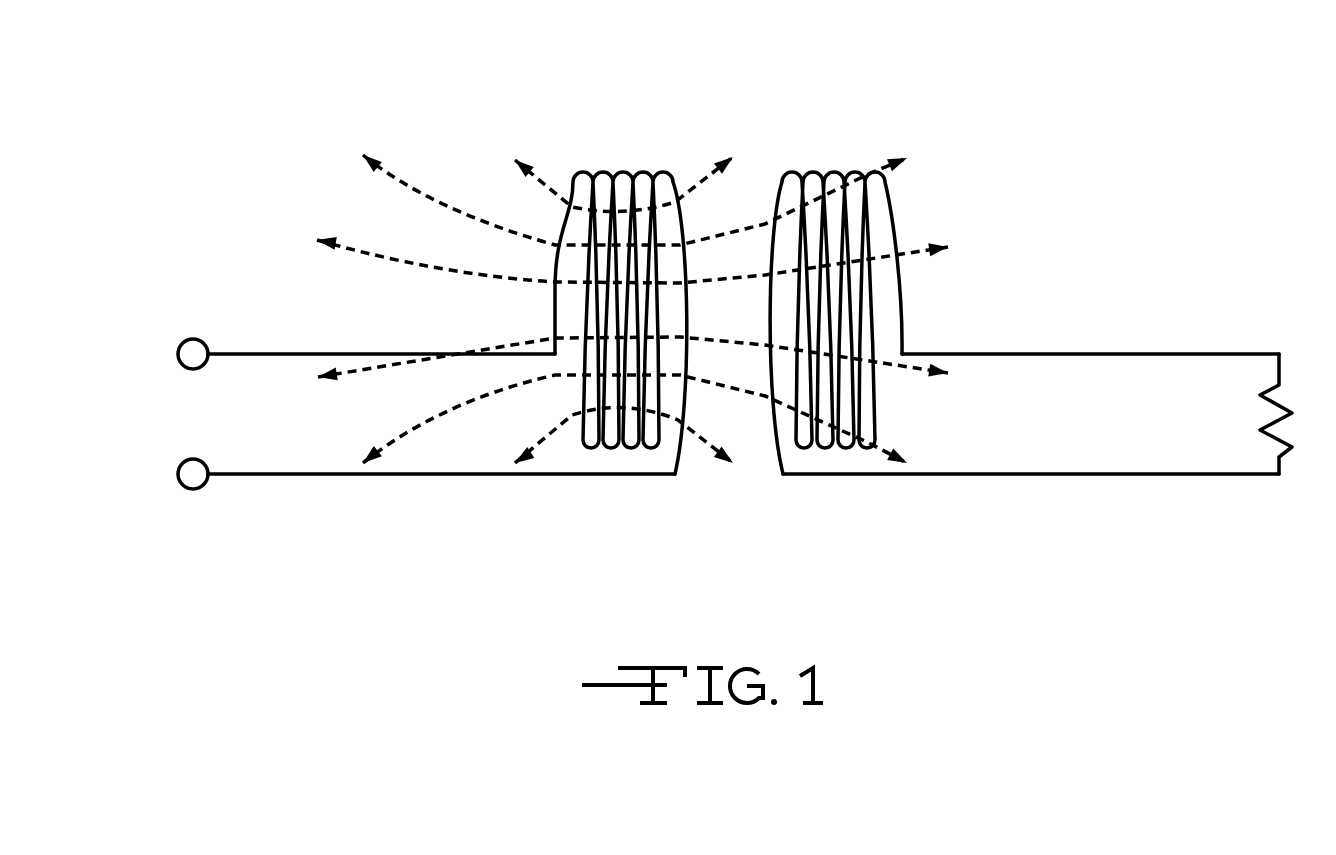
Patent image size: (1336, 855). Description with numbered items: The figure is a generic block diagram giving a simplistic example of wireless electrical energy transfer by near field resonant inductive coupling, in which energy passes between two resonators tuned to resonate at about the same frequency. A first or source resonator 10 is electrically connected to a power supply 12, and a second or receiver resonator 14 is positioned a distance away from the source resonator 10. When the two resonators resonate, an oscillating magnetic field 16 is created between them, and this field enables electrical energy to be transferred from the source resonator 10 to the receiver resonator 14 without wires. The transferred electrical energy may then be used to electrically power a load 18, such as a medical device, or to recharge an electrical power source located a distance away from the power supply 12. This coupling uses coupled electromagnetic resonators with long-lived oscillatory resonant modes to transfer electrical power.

The source resonator 10 is at (615, 168).
The power supply 12 is at (130, 384).
The receiver resonator 14 is at (808, 168).
The oscillating magnetic field 16 is at (447, 207).
The load 18 is at (1287, 400).